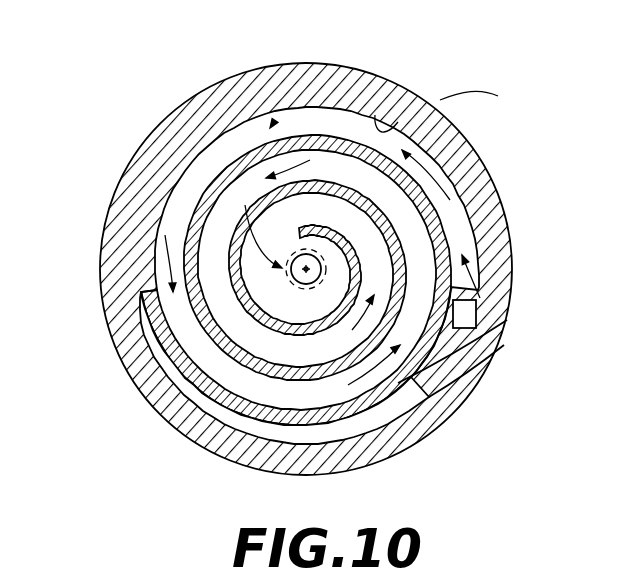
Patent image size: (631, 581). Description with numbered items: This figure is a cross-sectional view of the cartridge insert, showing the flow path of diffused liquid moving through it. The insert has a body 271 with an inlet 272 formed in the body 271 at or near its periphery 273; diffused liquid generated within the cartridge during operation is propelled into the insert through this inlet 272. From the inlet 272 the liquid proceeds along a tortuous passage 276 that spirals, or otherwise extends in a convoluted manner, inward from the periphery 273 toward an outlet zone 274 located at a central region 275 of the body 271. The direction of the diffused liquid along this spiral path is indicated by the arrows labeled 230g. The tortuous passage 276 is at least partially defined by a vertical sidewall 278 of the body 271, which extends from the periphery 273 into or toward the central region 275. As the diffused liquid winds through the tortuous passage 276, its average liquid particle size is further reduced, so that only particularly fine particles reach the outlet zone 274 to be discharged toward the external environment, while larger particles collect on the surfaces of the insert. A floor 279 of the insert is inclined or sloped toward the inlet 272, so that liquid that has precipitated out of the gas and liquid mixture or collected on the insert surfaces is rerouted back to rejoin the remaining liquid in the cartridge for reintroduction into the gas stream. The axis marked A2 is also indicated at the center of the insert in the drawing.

The body 271 is at (133, 285).
The inlet 272 is at (478, 283).
The periphery 273 is at (470, 200).
The outlet zone 274 is at (300, 288).
The central region 275 is at (242, 308).
The tortuous passage 276 is at (272, 125).
The vertical sidewall 278 is at (398, 122).
The floor 279 is at (258, 257).
The arrows representing diffused liquid flow through the tortuous passage 230g is at (283, 222).
The rotation axis A2 is at (308, 285).